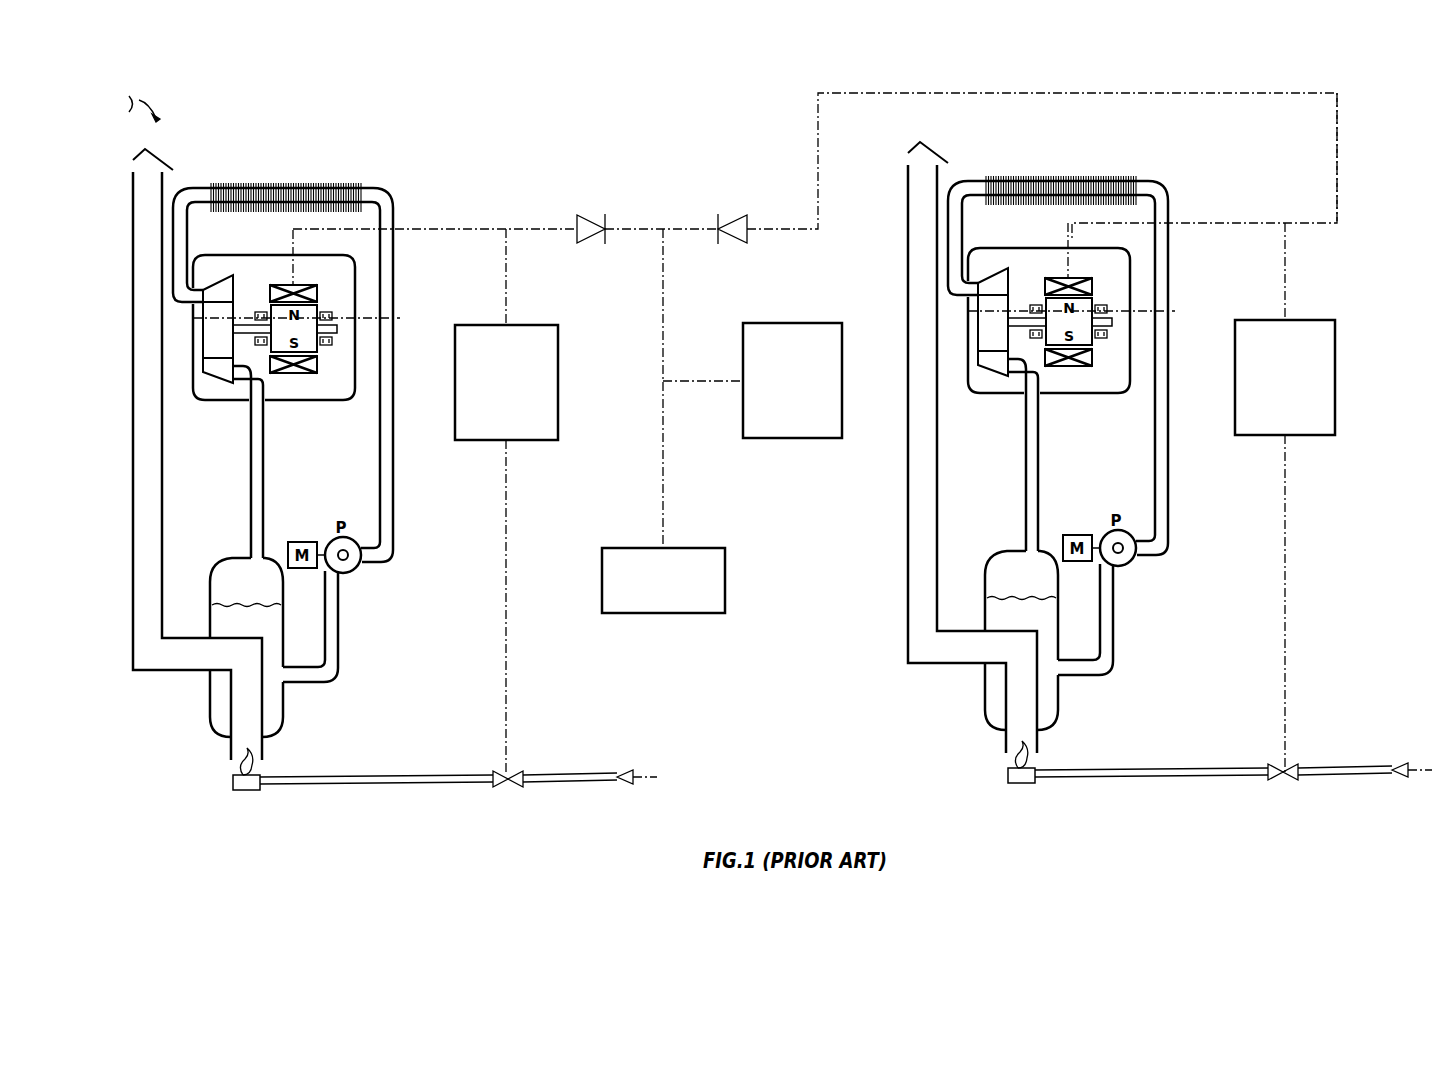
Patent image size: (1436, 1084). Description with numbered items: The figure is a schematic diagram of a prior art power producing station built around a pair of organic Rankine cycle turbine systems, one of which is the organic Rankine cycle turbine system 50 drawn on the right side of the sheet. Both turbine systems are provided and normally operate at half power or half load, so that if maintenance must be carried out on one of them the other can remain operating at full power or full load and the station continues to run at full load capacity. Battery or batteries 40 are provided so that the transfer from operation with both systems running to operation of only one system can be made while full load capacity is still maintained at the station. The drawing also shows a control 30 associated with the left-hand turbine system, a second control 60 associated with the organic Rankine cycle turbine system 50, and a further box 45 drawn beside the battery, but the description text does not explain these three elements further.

The control unit 30 is at (494, 323).
The battery 40 is at (637, 547).
The battery 45 is at (779, 322).
The organic Rankine cycle turbine system 50 is at (902, 86).
The second control unit 60 is at (1275, 320).